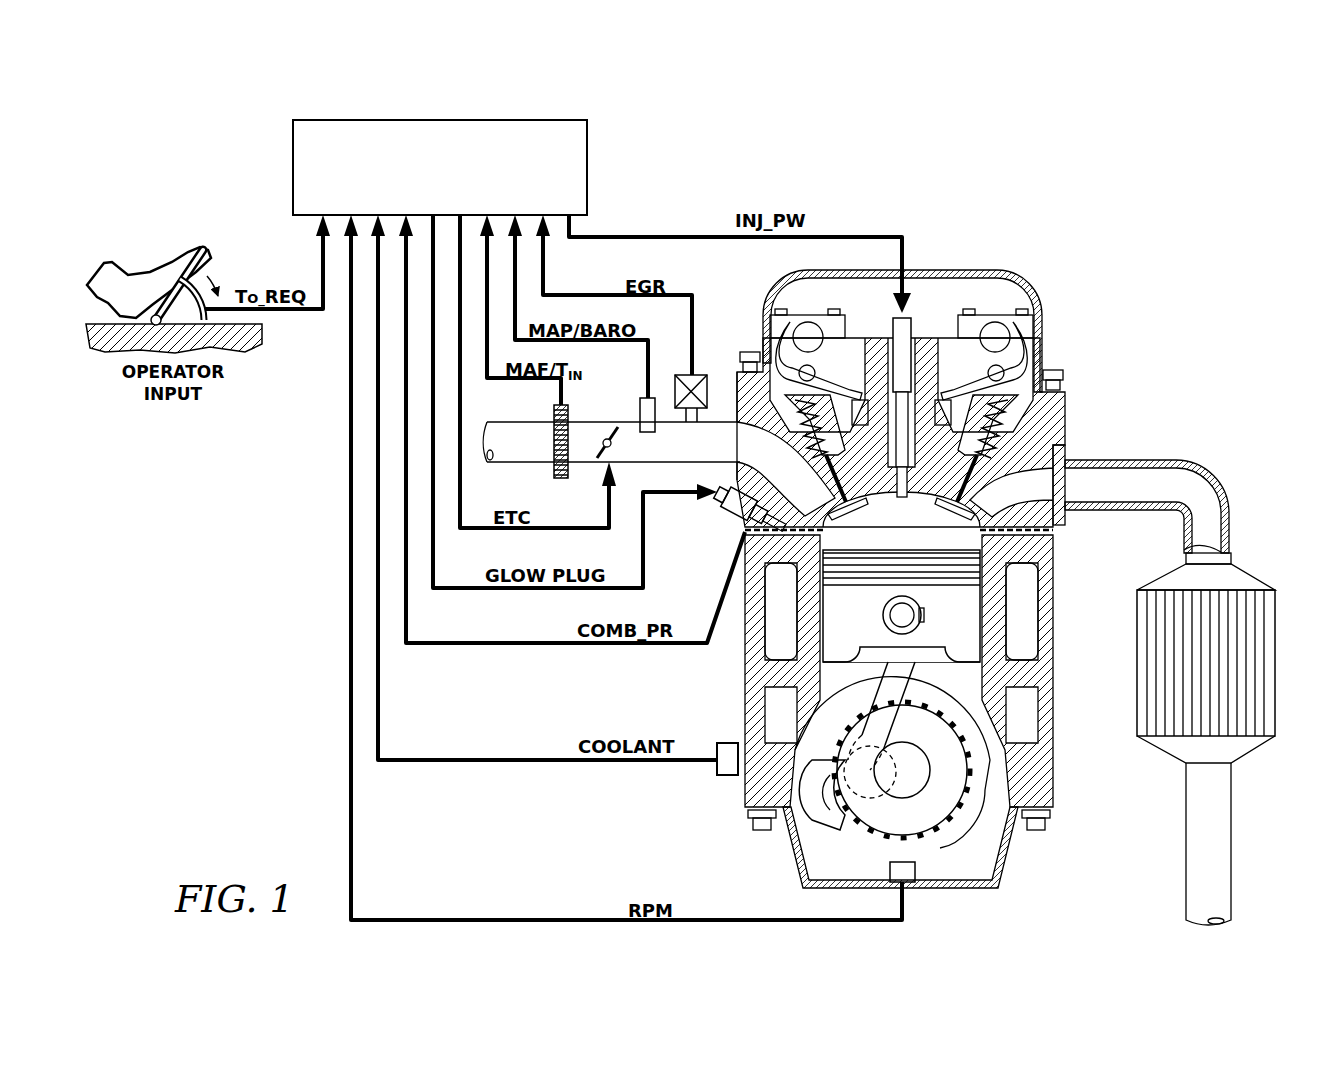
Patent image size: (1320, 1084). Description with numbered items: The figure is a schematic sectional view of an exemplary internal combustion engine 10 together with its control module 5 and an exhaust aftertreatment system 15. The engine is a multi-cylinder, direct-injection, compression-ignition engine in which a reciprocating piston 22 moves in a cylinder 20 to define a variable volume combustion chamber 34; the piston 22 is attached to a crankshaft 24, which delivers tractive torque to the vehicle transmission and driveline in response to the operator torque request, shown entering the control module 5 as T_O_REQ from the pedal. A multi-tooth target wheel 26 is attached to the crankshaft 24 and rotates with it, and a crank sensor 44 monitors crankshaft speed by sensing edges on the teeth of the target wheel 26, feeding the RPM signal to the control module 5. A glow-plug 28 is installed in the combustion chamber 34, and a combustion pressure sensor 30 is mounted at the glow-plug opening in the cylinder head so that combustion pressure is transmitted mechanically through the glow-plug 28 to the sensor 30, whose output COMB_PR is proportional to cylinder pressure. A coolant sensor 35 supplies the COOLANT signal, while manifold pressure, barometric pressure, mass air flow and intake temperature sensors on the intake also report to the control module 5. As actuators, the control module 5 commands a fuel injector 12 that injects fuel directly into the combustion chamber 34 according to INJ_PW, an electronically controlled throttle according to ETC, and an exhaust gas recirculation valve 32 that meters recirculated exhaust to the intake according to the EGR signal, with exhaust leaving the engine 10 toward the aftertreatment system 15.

The control module 5 is at (562, 128).
The internal combustion engine 10 is at (914, 580).
The fuel injector 12 is at (912, 330).
The exhaust aftertreatment system 15 is at (1250, 584).
The cylinder 20 is at (985, 527).
The piston 22 is at (901, 606).
The crankshaft 24 is at (980, 773).
The multi-tooth target wheel 26 is at (945, 790).
The glow-plug 28 is at (668, 497).
The combustion pressure sensor 30 is at (639, 669).
The exhaust gas recirculation valve 32 is at (700, 375).
The combustion chamber 34 is at (901, 530).
The coolant sensor 35 is at (675, 762).
The crank sensor 44 is at (910, 872).